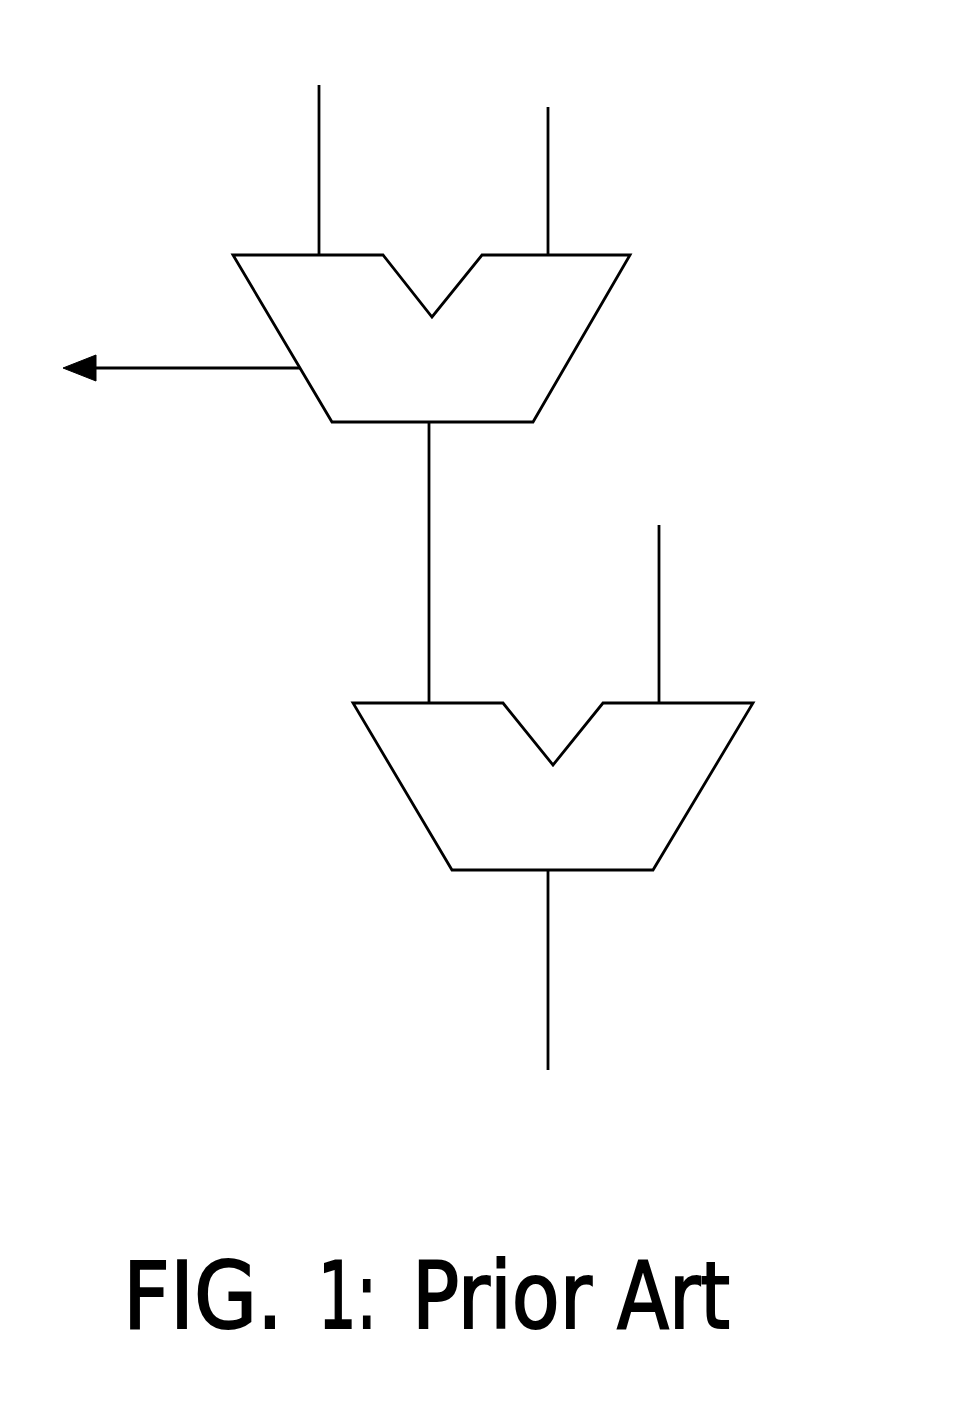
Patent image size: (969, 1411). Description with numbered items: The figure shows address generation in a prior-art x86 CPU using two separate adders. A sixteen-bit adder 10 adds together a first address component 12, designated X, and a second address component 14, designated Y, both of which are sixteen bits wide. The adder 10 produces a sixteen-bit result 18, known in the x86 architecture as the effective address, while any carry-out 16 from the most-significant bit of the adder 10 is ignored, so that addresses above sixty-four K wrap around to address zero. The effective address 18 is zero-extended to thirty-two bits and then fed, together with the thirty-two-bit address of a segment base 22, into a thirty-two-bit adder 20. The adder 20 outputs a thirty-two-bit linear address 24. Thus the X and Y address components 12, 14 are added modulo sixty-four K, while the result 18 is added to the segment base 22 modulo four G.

The adder 10 is at (575, 353).
The first address component 12 is at (318, 115).
The second address component 14 is at (550, 197).
The carry-out 16 is at (217, 370).
The result 18 is at (430, 528).
The 32-bit adder 20 is at (695, 803).
The segment base 22 is at (660, 568).
The linear address 24 is at (550, 993).